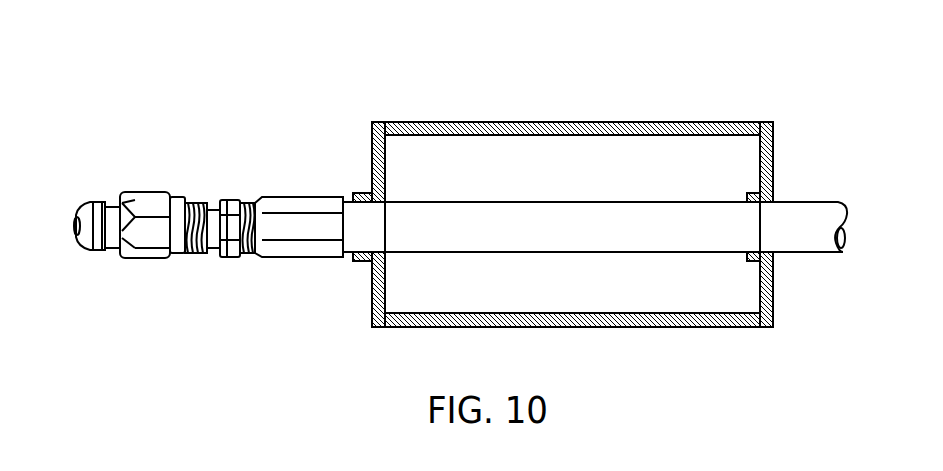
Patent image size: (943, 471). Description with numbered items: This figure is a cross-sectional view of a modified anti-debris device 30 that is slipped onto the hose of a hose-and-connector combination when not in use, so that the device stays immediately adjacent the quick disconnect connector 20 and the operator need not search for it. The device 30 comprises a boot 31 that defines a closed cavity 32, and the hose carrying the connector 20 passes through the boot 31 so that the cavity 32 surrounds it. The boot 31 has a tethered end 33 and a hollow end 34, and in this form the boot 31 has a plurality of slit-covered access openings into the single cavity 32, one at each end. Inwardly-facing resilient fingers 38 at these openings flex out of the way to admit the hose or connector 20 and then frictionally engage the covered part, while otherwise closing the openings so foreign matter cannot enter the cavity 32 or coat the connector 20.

The quick disconnect connector 20 is at (142, 184).
The anti-debris device 30 is at (576, 178).
The boot 31 is at (585, 121).
The cavity 32 is at (490, 168).
The tethered end 33 is at (405, 121).
The hollow end 34 is at (740, 121).
The fingers 38 is at (362, 193).